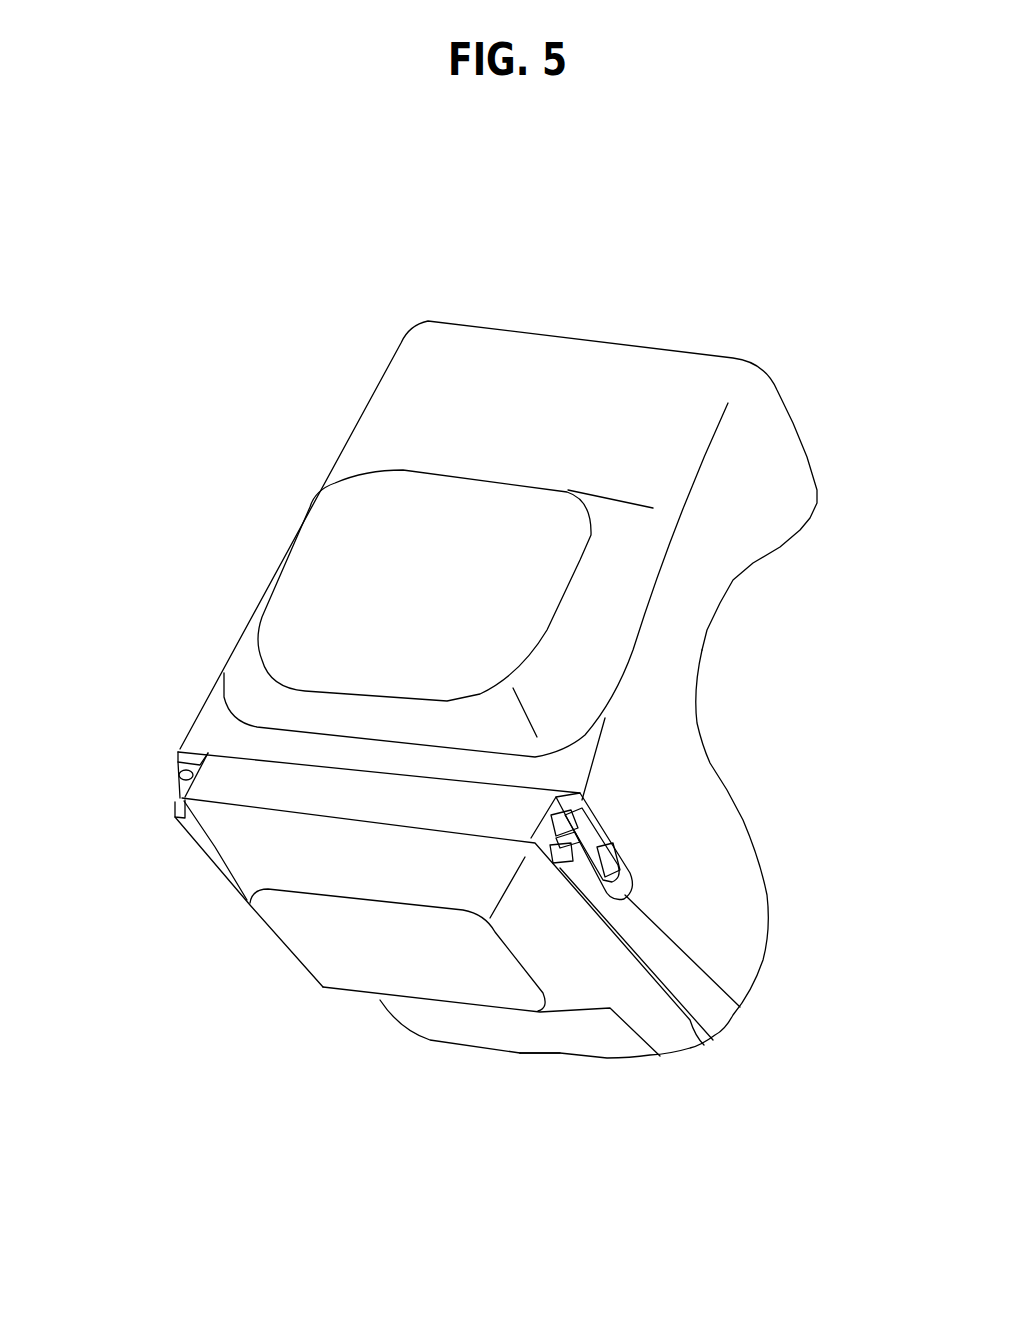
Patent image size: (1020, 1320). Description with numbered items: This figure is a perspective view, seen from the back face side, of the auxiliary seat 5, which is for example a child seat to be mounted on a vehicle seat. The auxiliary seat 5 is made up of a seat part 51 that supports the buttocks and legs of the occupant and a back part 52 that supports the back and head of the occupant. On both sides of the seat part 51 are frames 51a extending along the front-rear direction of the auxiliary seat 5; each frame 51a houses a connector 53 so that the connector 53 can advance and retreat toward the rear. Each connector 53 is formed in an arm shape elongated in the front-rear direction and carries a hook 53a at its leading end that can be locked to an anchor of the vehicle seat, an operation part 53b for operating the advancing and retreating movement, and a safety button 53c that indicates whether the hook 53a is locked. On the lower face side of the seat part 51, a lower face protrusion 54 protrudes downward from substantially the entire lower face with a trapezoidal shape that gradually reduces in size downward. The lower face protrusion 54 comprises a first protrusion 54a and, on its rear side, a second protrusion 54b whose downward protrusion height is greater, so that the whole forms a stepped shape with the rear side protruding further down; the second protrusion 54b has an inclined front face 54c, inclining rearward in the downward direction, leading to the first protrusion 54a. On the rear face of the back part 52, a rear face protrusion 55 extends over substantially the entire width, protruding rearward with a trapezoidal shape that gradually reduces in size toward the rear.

The auxiliary seat 5 is at (576, 184).
The seat part 51 is at (802, 942).
The frame 51a is at (499, 744).
The back part 52 is at (430, 281).
The connector 53 is at (447, 752).
The hook 53a is at (437, 752).
The operation part 53b is at (719, 806).
The safety button 53c is at (702, 821).
The lower face protrusion 54 is at (497, 1145).
The first protrusion 54a is at (522, 1096).
The second protrusion 54b is at (397, 1017).
The inclined front face 54c is at (472, 1073).
The rear face protrusion 55 is at (357, 497).